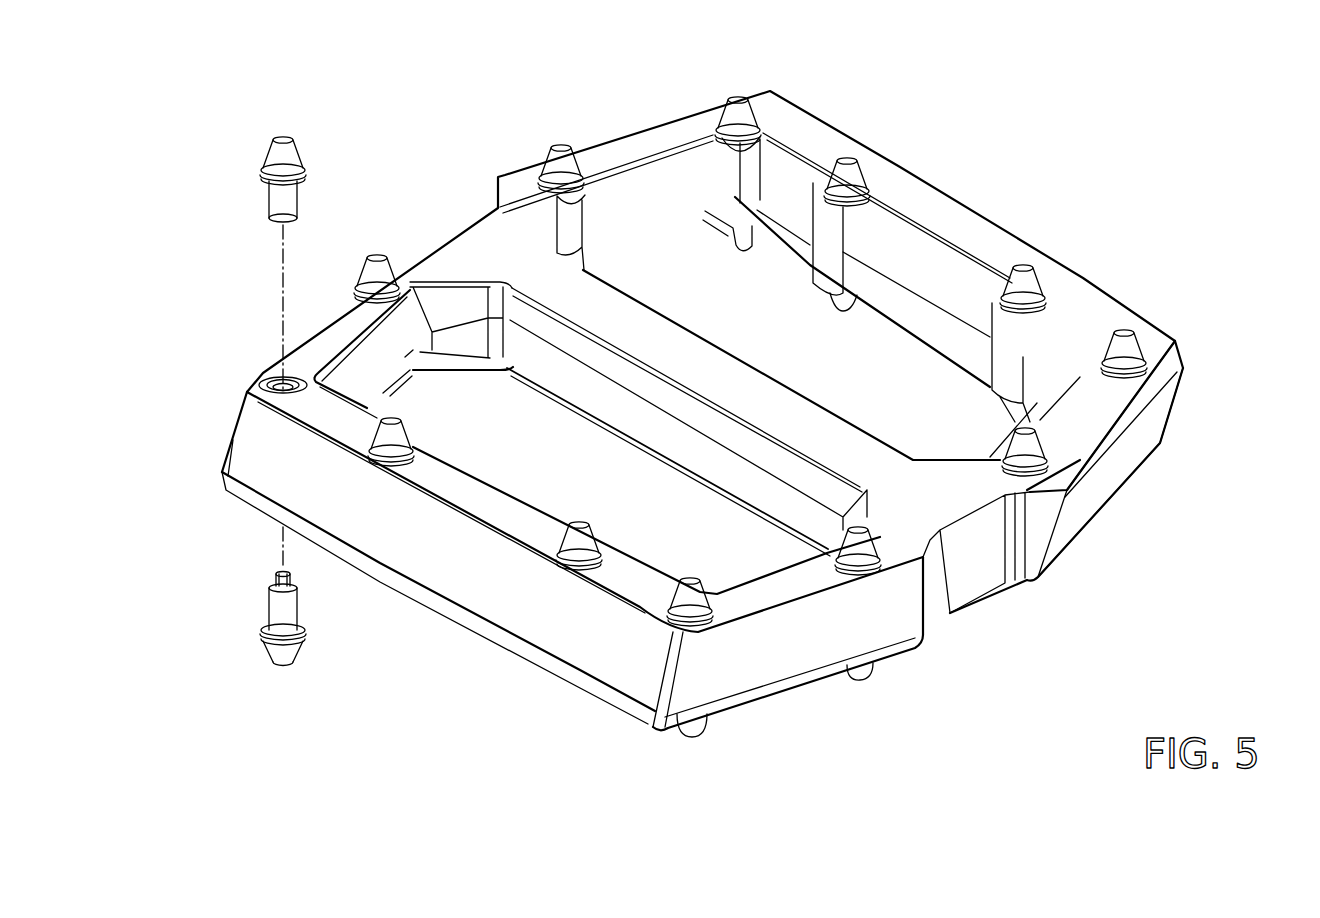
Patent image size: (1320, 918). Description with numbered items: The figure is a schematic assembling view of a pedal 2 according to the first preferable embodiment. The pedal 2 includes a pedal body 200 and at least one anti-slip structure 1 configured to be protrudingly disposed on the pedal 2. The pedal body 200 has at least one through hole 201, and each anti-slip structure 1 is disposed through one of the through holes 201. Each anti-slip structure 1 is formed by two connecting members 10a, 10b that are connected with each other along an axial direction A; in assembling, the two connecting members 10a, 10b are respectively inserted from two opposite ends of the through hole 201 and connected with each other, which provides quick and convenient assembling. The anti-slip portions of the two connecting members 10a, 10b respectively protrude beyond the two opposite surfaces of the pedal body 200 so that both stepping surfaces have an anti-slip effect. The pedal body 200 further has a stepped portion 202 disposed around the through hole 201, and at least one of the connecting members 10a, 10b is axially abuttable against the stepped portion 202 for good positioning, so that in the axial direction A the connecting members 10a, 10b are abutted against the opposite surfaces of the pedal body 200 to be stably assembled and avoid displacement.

The anti-slip structure 1 is at (558, 147).
The pedal 2 is at (1047, 194).
The connecting member 10a is at (270, 608).
The connecting member 10b is at (275, 194).
The axial direction A is at (282, 268).
The pedal body 200 is at (1128, 452).
The through hole 201 is at (252, 386).
The stepped portion 202 is at (262, 368).